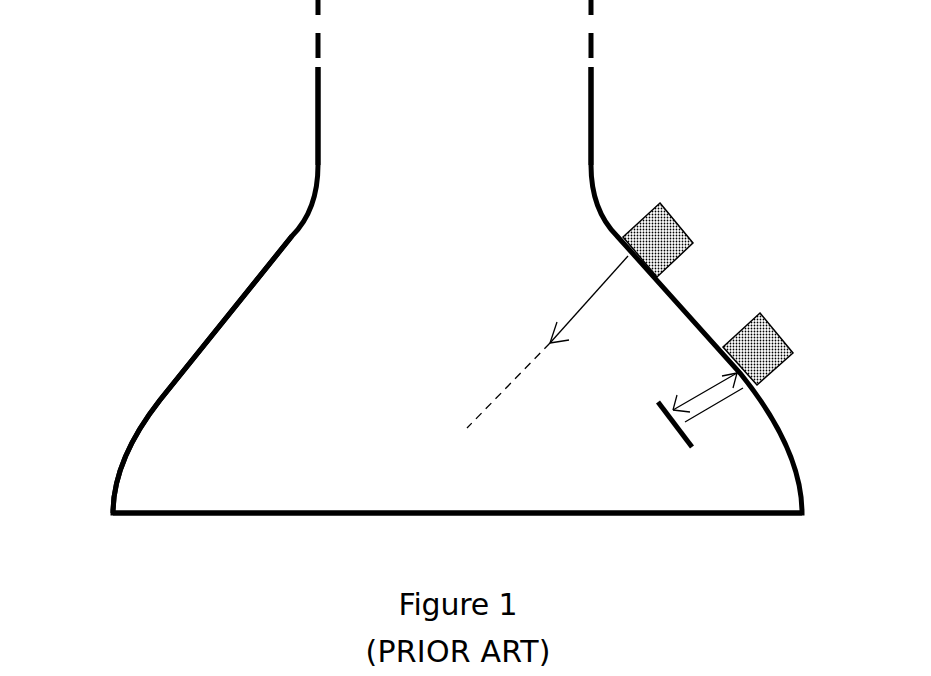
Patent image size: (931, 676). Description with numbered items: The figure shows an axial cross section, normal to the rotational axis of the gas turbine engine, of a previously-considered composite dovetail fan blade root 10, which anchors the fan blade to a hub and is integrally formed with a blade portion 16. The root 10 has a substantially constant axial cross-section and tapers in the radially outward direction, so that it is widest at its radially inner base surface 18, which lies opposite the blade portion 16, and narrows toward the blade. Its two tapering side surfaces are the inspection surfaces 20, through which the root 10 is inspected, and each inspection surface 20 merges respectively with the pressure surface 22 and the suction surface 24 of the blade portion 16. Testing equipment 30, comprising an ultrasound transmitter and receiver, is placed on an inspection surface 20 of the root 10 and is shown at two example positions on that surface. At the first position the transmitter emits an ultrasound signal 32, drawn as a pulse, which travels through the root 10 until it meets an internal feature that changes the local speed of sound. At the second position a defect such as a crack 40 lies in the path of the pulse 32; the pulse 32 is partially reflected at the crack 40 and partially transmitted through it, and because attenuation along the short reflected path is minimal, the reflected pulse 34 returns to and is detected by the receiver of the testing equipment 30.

The fan blade root 10 is at (295, 283).
The blade portion 16 is at (536, 119).
The radially inner base surface 18 is at (185, 515).
The inspection surfaces 20 is at (158, 400).
The pressure surface 22 is at (318, 128).
The suction surface 24 is at (593, 148).
The testing equipment 30 is at (690, 227).
The ultrasound signal 32 is at (600, 290).
The reflected pulse 34 is at (710, 405).
The crack 40 is at (675, 434).